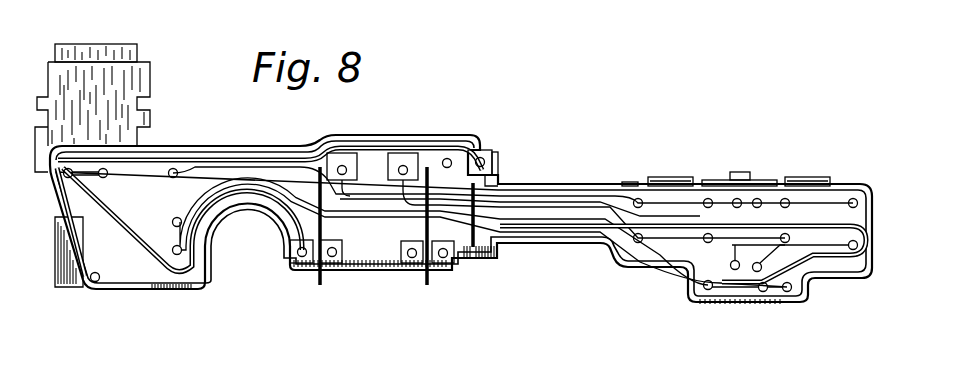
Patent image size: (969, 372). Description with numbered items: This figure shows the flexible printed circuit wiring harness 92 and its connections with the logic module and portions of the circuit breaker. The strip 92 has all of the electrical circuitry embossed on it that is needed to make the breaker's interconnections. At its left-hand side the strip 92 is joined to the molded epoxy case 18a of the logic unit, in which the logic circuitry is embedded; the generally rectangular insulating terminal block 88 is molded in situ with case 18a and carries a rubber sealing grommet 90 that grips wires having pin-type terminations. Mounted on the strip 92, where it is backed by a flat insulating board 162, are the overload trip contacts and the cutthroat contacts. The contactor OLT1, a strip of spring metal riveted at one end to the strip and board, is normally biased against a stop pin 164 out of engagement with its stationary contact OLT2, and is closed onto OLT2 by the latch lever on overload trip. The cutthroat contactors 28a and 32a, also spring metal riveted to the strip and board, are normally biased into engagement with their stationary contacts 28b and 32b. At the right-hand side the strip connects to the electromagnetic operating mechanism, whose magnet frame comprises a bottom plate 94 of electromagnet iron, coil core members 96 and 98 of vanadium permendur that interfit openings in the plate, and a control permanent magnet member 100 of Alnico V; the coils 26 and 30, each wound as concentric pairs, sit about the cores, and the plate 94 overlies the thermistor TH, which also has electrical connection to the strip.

The coil 30 is at (843, 183).
The insulating terminal block 88 is at (110, 78).
The rubber sealing grommet 90 is at (111, 47).
The molded epoxy case 18a is at (67, 282).
The flexible printed circuit wiring harness 92 is at (130, 273).
The contactor 28a is at (320, 283).
The stationary contact 28b is at (298, 267).
The contactor 32a is at (423, 282).
The stationary contact 32b is at (438, 275).
The stop pin 164 is at (462, 127).
The stationary contact OLT2 is at (474, 150).
The flat insulating board 162 is at (496, 163).
The contactor OLT1 is at (484, 182).
The coil 26 is at (637, 184).
The coil core member 96 is at (672, 178).
The control permanent magnet member 100 is at (752, 153).
The coil core member 98 is at (816, 178).
The bottom plate 94 is at (667, 277).
The thermistor TH is at (777, 304).